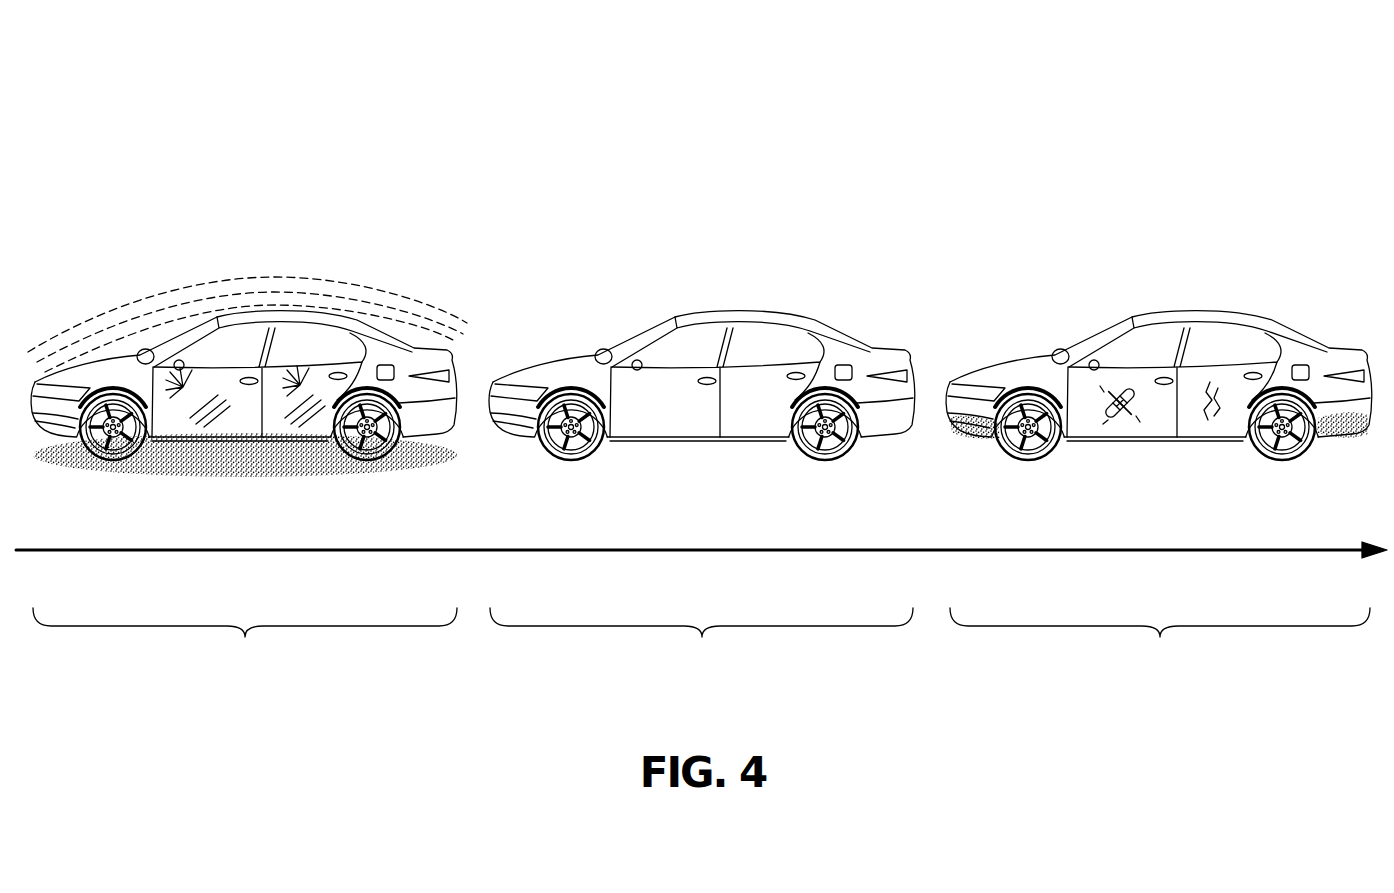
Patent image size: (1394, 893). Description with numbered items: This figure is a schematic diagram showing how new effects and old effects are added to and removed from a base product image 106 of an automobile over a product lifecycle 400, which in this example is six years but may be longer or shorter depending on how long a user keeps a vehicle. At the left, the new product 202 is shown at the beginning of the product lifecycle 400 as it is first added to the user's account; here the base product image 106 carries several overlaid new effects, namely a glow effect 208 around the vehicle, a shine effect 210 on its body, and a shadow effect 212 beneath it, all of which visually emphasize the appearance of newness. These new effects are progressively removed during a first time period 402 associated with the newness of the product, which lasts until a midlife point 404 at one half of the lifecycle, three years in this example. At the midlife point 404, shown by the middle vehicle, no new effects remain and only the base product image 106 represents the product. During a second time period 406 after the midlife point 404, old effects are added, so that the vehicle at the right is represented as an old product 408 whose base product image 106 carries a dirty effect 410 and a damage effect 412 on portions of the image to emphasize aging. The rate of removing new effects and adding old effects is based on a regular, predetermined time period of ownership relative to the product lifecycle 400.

The product lifecycle 400 is at (422, 122).
The base product image 106 is at (916, 354).
The new product 202 is at (208, 280).
The glow effect 208 is at (307, 282).
The shine effect 210 is at (302, 418).
The shadow effect 212 is at (220, 458).
The first time period 402 is at (245, 639).
The midlife point 404 is at (701, 639).
The second time period 406 is at (1160, 639).
The old product 408 is at (1238, 294).
The dirty effect 410 is at (970, 437).
The damage effect 412 is at (1122, 422).